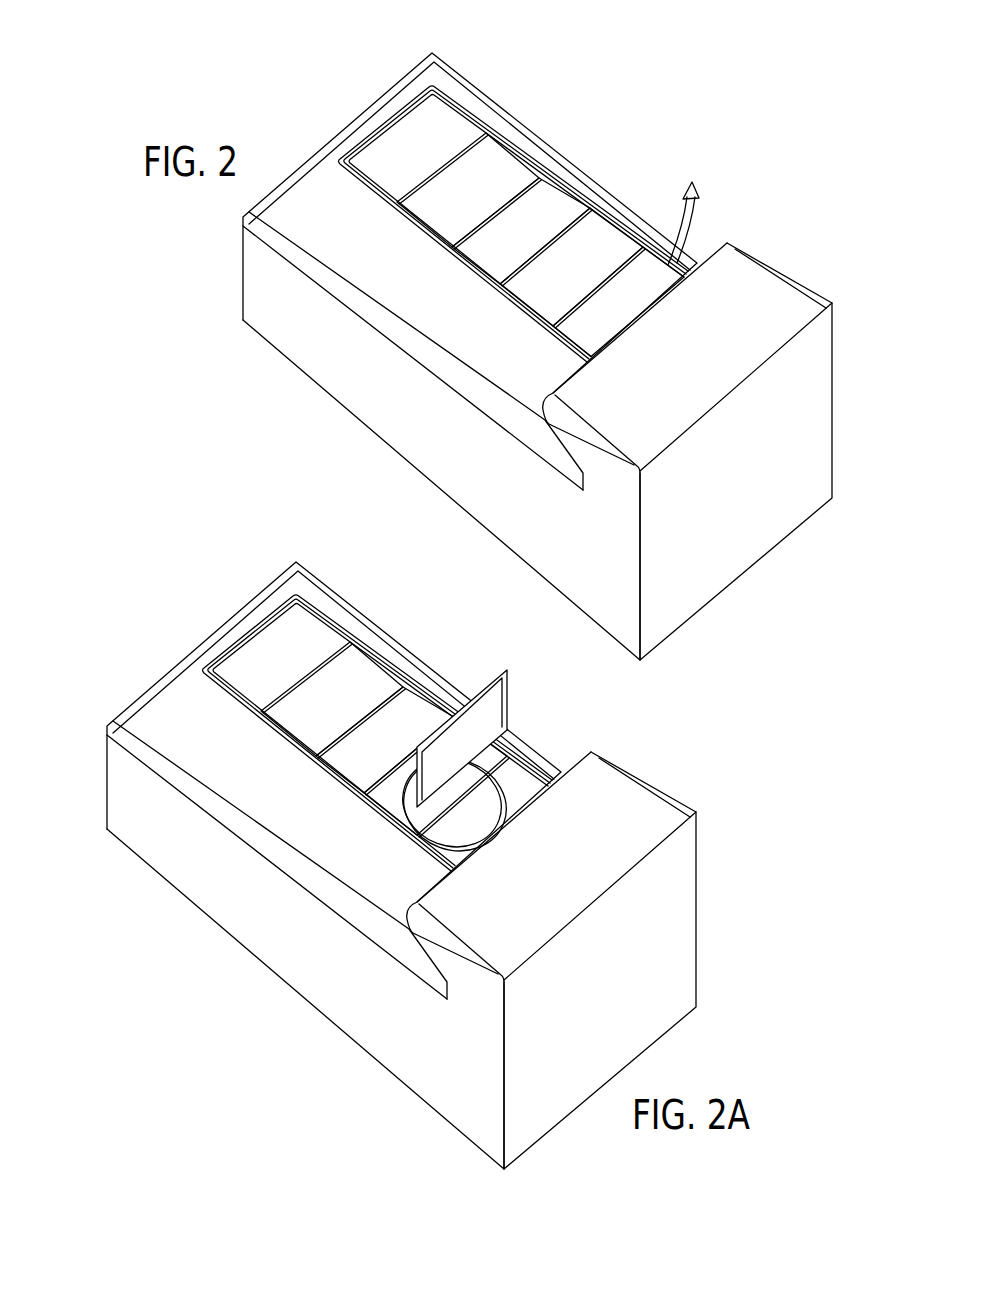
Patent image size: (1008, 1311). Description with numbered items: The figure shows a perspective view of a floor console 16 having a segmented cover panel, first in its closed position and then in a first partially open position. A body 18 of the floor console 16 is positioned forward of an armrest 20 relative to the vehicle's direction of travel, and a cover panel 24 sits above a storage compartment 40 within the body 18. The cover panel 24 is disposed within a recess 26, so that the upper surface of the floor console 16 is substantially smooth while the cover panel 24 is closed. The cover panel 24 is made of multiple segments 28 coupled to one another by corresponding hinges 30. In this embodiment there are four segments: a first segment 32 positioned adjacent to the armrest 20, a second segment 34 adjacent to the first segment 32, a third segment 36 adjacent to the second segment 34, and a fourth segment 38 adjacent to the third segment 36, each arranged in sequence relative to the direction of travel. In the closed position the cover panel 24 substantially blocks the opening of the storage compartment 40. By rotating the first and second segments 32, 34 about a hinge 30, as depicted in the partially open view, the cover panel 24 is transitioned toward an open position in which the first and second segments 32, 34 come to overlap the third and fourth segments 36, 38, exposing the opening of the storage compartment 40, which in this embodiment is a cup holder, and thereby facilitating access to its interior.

In FIG. 2, the floor console 16 is at (537, 335).
In FIG. 2A, the floor console 16 is at (401, 865).
In FIG. 2, the body 18 is at (353, 253).
In FIG. 2A, the body 18 is at (216, 762).
In FIG. 2, the armrest 20 is at (783, 303).
In FIG. 2A, the armrest 20 is at (647, 812).
In FIG. 2, the cover panel 24 is at (616, 252).
In FIG. 2A, the cover panel 24 is at (412, 713).
In FIG. 2, the recess 26 is at (437, 128).
In FIG. 2A, the recess 26 is at (301, 637).
In FIG. 2, the segments 28 is at (563, 217).
In FIG. 2A, the segments 28 is at (379, 733).
In FIG. 2, the hinges 30 is at (498, 165).
In FIG. 2A, the hinges 30 is at (405, 770).
In FIG. 2, the first segment 32 is at (602, 323).
In FIG. 2A, the first segment 32 is at (448, 751).
In FIG. 2, the second segment 34 is at (551, 294).
In FIG. 2A, the second segment 34 is at (398, 805).
In FIG. 2, the third segment 36 is at (488, 259).
In FIG. 2A, the third segment 36 is at (352, 768).
In FIG. 2, the fourth segment 38 is at (430, 214).
In FIG. 2A, the fourth segment 38 is at (294, 725).
In FIG. 2A, the storage compartment 40 is at (490, 792).